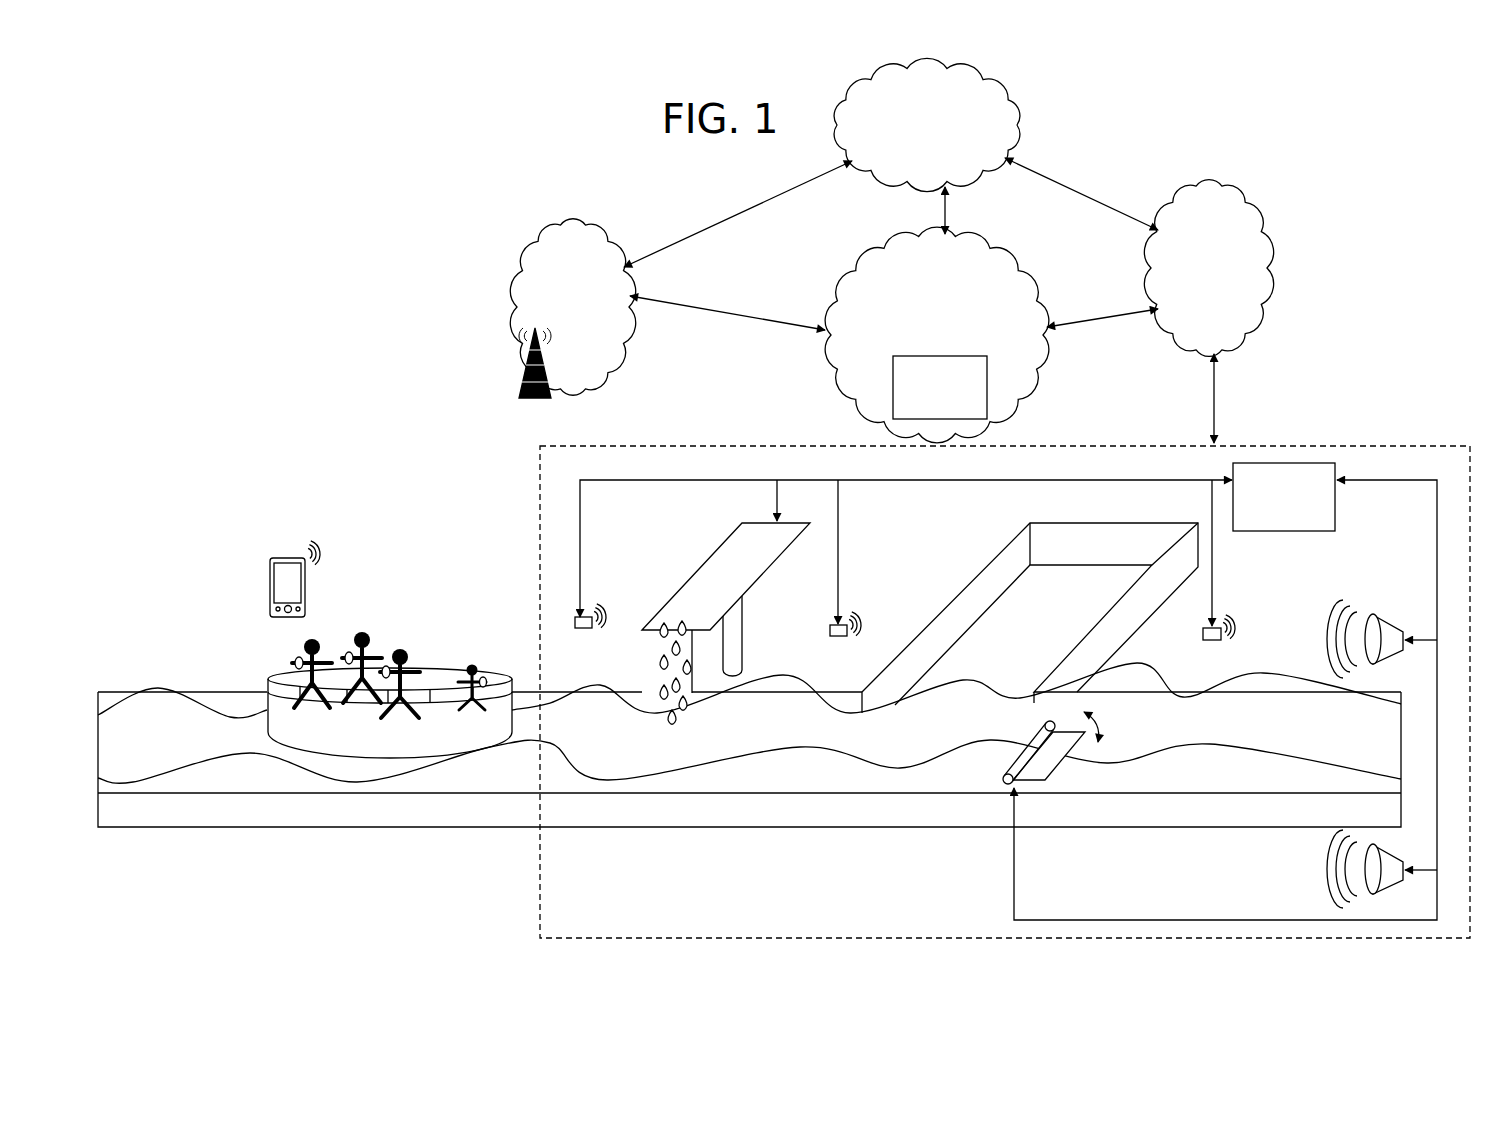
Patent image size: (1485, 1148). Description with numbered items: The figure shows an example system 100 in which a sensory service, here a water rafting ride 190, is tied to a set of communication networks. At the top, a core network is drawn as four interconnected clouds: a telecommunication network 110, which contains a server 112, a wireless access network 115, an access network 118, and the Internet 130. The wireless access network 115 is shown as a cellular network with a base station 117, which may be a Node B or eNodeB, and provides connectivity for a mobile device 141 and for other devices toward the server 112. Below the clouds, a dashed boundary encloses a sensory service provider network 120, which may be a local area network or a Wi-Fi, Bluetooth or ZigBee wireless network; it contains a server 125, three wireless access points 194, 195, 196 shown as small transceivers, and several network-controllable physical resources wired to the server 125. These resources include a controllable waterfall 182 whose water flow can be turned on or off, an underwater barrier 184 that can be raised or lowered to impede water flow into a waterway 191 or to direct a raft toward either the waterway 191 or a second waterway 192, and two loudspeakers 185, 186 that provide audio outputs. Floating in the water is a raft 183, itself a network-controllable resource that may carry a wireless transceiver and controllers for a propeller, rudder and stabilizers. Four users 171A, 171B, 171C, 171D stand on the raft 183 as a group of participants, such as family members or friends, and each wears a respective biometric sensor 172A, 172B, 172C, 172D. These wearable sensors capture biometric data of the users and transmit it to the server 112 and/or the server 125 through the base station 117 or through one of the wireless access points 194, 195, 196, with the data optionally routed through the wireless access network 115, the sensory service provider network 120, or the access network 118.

The system 100 is at (204, 136).
The telecommunication network 110 is at (937, 335).
The server 112 is at (940, 387).
The wireless access network 115 is at (572, 307).
The base station 117 is at (543, 398).
The access network 118 is at (1208, 268).
The sensory service provider network 120 is at (622, 908).
The server 125 is at (1284, 497).
The Internet 130 is at (927, 124).
The mobile device 141 is at (291, 557).
The user 171A is at (297, 688).
The user 171B is at (376, 650).
The user 171C is at (418, 667).
The user 171D is at (472, 664).
The biometric sensor 172A is at (301, 659).
The biometric sensor 172B is at (349, 653).
The biometric sensor 172C is at (388, 664).
The biometric sensor 172D is at (486, 682).
The network-controllable physical resource 182 is at (726, 623).
The raft 183 is at (330, 757).
The underwater barrier 184 is at (1080, 746).
The loudspeaker 185 is at (1393, 890).
The loudspeaker 186 is at (1391, 658).
The water rafting ride 190 is at (180, 646).
The waterway 191 is at (749, 745).
The waterway 192 is at (1030, 618).
The wireless access point 194 is at (583, 628).
The wireless access point 195 is at (838, 636).
The wireless access point 196 is at (1212, 640).